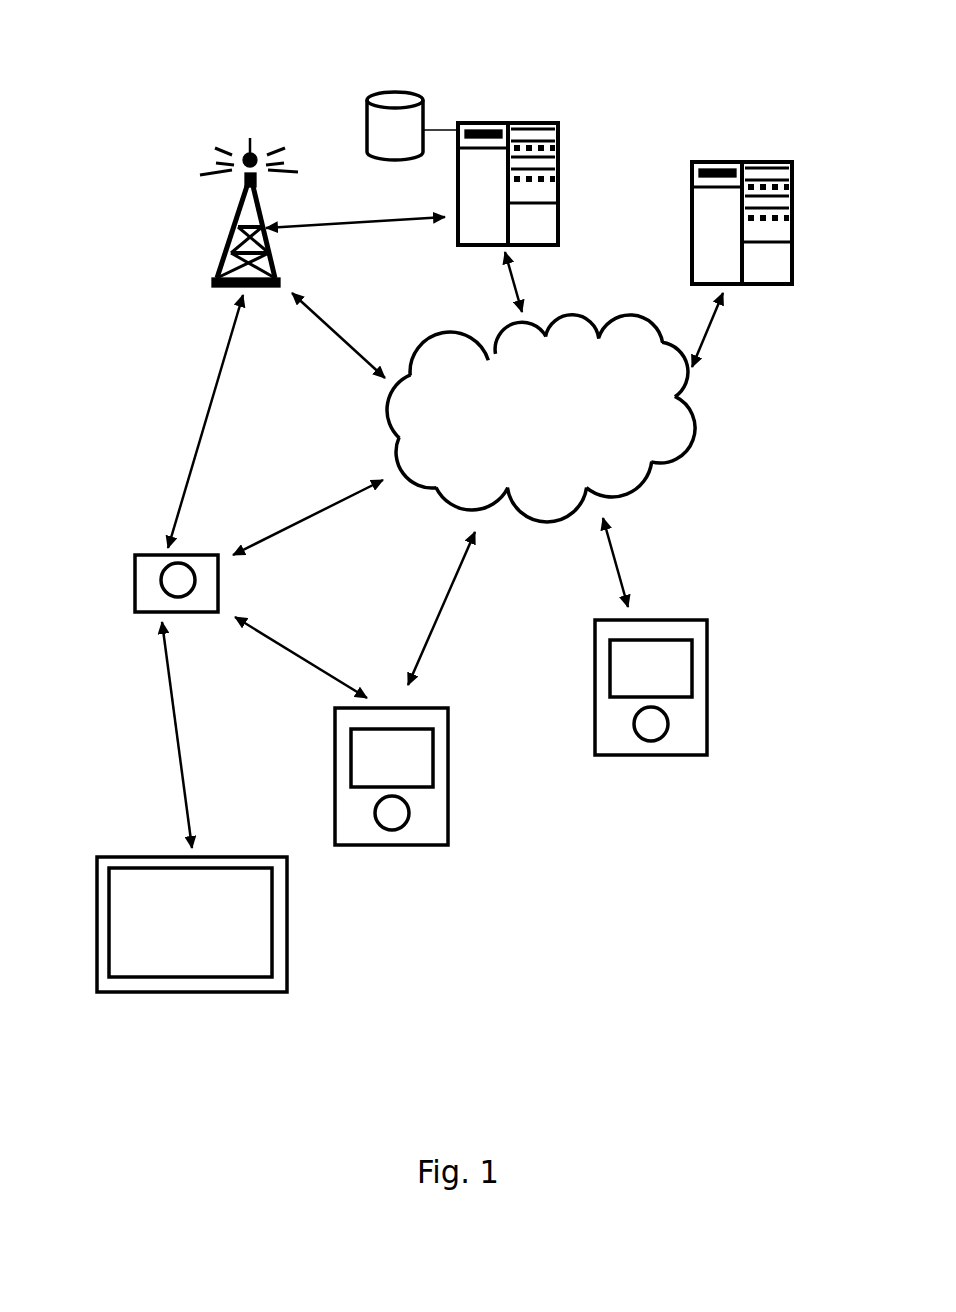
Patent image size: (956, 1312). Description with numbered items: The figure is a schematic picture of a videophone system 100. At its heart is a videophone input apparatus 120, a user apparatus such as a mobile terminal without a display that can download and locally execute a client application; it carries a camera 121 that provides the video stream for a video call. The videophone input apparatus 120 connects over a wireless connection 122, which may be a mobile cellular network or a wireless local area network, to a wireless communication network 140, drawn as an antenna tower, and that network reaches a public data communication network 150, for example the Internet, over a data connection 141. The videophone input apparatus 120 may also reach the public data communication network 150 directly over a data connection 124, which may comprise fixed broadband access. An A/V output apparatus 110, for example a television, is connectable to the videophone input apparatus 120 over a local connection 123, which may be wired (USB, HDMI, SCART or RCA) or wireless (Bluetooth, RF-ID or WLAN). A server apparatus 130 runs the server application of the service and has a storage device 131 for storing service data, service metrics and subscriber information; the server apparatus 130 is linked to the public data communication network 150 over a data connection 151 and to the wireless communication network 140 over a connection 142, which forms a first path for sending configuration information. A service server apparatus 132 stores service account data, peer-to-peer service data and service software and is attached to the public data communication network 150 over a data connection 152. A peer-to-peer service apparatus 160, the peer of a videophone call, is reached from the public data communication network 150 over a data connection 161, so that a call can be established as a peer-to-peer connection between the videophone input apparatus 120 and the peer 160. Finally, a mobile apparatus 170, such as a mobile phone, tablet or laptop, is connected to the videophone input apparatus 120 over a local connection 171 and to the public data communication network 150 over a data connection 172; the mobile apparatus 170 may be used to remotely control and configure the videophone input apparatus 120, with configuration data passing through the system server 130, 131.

The system 100 is at (167, 92).
The A/V output apparatus 110 is at (176, 992).
The videophone input apparatus 120 is at (228, 617).
The camera 121 is at (190, 597).
The wireless connection 122 is at (207, 414).
The local connection 123 is at (180, 746).
The data connection 124 is at (333, 504).
The server apparatus 130 is at (540, 124).
The storage device 131 is at (407, 92).
The service server apparatus 132 is at (728, 163).
The wireless communication network 140 is at (237, 205).
The data connection 141 is at (338, 338).
The wireless communication network connection 142 is at (378, 222).
The public data communication network 150 is at (677, 452).
The data connection 151 is at (520, 292).
The data connection 152 is at (708, 352).
The peer-to-peer service apparatus 160 is at (658, 755).
The data connection 161 is at (625, 580).
The mobile apparatus 170 is at (398, 845).
The local connection 171 is at (297, 656).
The data connection 172 is at (447, 626).